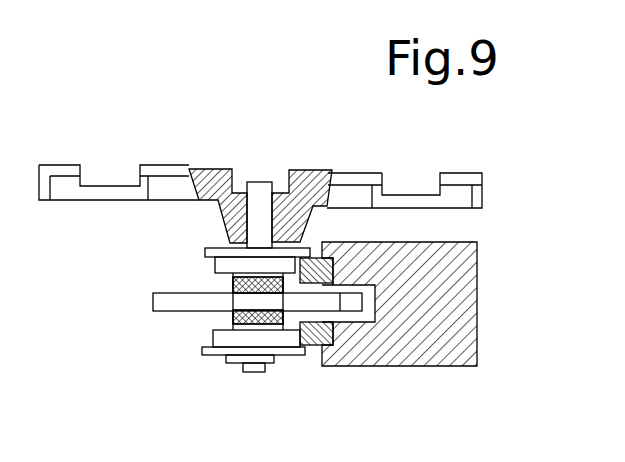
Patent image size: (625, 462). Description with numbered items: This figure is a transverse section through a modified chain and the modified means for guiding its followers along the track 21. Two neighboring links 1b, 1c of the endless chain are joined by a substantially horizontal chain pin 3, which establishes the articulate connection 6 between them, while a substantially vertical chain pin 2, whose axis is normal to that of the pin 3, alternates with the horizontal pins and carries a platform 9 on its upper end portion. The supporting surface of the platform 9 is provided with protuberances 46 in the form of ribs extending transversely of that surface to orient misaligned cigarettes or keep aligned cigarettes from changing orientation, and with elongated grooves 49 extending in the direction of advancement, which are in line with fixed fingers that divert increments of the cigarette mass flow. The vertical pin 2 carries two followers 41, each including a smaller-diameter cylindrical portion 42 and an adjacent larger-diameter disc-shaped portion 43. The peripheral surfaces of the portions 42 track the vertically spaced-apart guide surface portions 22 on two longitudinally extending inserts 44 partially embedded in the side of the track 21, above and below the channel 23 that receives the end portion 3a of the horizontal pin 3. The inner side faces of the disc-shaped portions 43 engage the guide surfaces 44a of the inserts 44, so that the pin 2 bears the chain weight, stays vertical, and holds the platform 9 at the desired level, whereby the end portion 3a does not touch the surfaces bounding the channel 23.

The link 1b is at (233, 285).
The link 1c is at (252, 333).
The vertical chain pin 2 is at (250, 367).
The horizontal chain pin 3 is at (244, 268).
The end portion of horizontal pin 3a is at (353, 302).
The articulate connection 6 is at (200, 322).
The platform 9 is at (162, 190).
The track 21 is at (416, 336).
The portion of composite vertical guide surface 22 is at (262, 265).
The channel 23 is at (363, 318).
The follower 41 is at (201, 250).
The smaller-diameter cylindrical portion 42 is at (290, 338).
The larger-diameter disc-shaped portion 43 is at (278, 358).
The insert 44 is at (313, 348).
The guide surface 44a is at (318, 258).
The protuberance 46 is at (357, 178).
The groove 49 is at (260, 143).